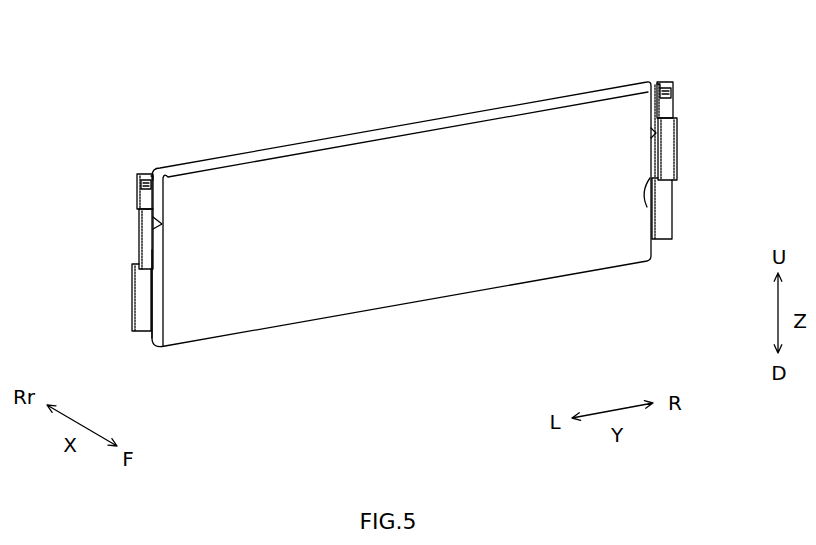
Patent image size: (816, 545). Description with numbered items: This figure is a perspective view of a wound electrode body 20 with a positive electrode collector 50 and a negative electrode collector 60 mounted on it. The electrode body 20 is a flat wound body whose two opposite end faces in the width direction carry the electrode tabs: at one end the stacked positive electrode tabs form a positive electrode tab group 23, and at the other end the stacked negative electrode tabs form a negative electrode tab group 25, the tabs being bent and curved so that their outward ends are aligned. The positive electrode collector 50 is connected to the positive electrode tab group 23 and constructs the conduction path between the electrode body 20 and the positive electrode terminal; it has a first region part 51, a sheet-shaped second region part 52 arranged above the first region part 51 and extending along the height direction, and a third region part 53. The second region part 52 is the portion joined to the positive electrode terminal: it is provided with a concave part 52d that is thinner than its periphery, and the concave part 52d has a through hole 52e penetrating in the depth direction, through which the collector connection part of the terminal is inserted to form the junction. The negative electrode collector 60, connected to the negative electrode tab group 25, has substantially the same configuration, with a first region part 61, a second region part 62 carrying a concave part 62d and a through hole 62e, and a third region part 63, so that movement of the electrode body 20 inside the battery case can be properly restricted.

The electrode body 20 is at (415, 148).
The positive electrode tab group 23 is at (160, 253).
The negative electrode tab group 25 is at (652, 178).
The positive electrode collector 50 is at (127, 220).
The first region part 51 is at (148, 229).
The second region part 52 is at (141, 162).
The concave part 52d is at (143, 180).
The through hole 52e is at (153, 178).
The third region part 53 is at (145, 291).
The negative electrode collector 60 is at (698, 134).
The first region part 61 is at (678, 128).
The second region part 62 is at (682, 74).
The concave part 62d is at (668, 83).
The through hole 62e is at (660, 85).
The third region part 63 is at (672, 192).